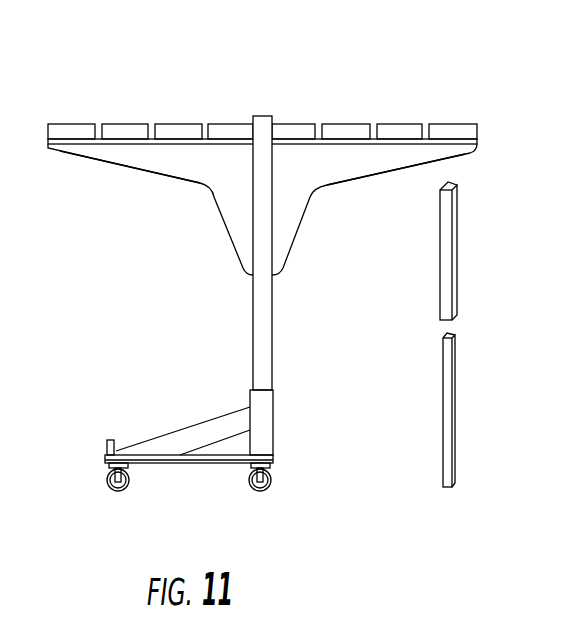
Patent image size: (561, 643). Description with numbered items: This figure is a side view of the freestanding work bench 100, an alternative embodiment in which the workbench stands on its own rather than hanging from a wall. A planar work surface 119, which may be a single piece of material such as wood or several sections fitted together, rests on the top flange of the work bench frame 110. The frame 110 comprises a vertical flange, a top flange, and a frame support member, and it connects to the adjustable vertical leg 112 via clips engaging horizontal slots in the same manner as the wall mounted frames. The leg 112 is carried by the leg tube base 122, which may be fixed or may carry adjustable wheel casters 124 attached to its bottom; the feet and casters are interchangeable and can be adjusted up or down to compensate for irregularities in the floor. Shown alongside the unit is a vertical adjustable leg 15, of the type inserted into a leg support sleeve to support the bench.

The freestanding work bench 100 is at (262, 158).
The work surface 119 is at (400, 123).
The work bench frame 110 is at (166, 190).
The adjustable vertical leg 112 is at (272, 318).
The leg tube base 122 is at (197, 422).
The wheel caster 124 is at (105, 478).
The vertical adjustable leg 15 is at (440, 258).